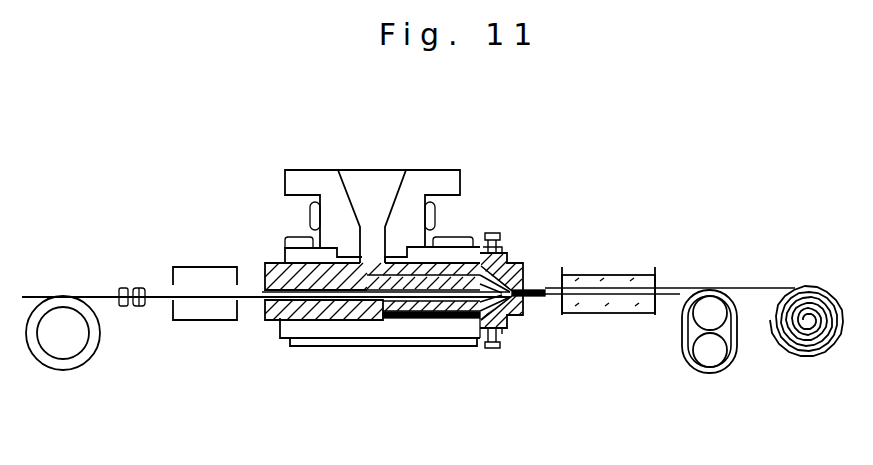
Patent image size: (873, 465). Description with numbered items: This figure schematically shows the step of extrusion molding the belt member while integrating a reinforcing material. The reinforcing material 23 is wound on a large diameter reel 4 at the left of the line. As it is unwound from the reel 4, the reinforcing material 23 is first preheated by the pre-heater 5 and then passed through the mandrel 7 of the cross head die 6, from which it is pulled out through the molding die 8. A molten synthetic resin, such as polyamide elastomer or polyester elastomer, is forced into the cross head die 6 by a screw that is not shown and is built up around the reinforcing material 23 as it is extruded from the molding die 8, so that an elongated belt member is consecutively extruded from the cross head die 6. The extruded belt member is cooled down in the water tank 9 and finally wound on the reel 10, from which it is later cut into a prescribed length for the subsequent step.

The large diameter reel 4 is at (66, 318).
The pre-heater 5 is at (205, 265).
The cross head die 6 is at (356, 357).
The mandrel 7 is at (425, 305).
The molding die 8 is at (510, 262).
The water tank 9 is at (598, 316).
The reel 10 is at (808, 322).
The reinforcing material 23 is at (160, 300).